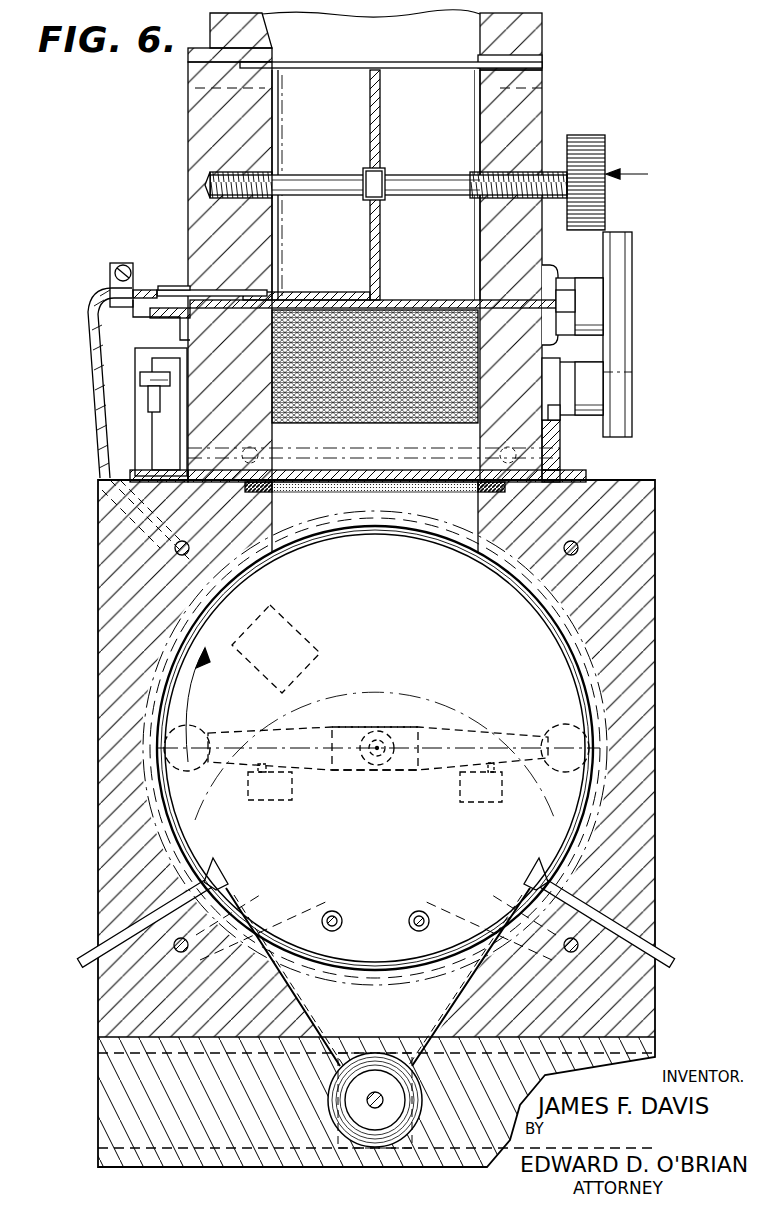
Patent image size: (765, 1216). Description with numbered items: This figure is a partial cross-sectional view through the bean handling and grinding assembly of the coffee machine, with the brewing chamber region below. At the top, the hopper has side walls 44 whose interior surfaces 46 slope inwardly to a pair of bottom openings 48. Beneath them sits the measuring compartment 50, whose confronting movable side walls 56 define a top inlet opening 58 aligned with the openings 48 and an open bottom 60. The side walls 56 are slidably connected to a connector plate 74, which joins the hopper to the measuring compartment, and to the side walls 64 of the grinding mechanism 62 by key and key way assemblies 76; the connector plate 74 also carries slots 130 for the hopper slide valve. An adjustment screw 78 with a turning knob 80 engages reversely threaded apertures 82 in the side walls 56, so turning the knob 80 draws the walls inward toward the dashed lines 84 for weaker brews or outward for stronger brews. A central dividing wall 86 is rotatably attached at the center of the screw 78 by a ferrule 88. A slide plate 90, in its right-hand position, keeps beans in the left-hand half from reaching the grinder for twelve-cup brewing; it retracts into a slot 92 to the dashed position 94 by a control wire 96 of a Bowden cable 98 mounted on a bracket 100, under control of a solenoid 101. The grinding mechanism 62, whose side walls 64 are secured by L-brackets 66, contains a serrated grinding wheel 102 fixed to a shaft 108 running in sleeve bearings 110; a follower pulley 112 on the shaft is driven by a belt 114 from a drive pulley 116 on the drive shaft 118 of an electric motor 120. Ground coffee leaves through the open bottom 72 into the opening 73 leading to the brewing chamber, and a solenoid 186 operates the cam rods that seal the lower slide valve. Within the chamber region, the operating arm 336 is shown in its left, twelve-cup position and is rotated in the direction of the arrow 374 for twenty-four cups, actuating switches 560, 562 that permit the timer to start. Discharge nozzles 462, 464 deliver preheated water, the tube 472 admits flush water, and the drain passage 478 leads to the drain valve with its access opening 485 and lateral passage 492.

The side walls 44 is at (545, 25).
The interior surfaces 46 is at (255, 44).
The bottom openings 48 is at (336, 57).
The measuring compartment 50 is at (640, 174).
The movable side walls 56 is at (212, 120).
The top inlet opening 58 is at (427, 185).
The open bottom 60 is at (382, 305).
The coffee bean grinding mechanism 62 is at (556, 354).
The side walls 64 is at (180, 346).
The L-brackets 66 is at (142, 476).
The open bottom 72 is at (382, 470).
The opening 73 is at (432, 520).
The connector plate 74 is at (512, 68).
The key and key way assemblies 76 is at (212, 92).
The adjustment screw 78 is at (338, 160).
The turning knob 80 is at (606, 148).
The reversely threaded apertures 82 is at (228, 178).
The dashed lines 84 is at (290, 100).
The central dividing wall 86 is at (382, 72).
The ferrule 88 is at (385, 175).
The slide plate 90 is at (298, 290).
The slot 92 is at (228, 290).
The dashed position 94 is at (160, 285).
The control wire 96 is at (178, 286).
The Bowden cable 98 is at (90, 340).
The bracket 100 is at (114, 273).
The solenoid 101 is at (300, 610).
The serrated grinding wheel 102 is at (402, 322).
The shaft 108 is at (566, 392).
The sleeve bearings 110 is at (565, 412).
The follower pulley 112 is at (632, 386).
The belt 114 is at (616, 332).
The drive pulley 116 is at (628, 282).
The drive shaft 118 is at (566, 300).
The electric motor 120 is at (590, 280).
The slots 130 is at (542, 58).
The solenoid 186 is at (136, 414).
The operating arm 336 is at (512, 740).
The arrow 374 is at (192, 700).
The discharge nozzle 462 is at (335, 912).
The discharge nozzle 464 is at (432, 905).
The tube 472 is at (130, 917).
The drain passage 478 is at (440, 1022).
The access opening 485 is at (374, 1085).
The lateral passage 492 is at (125, 1058).
The switch 560 is at (470, 802).
The switch 562 is at (262, 800).